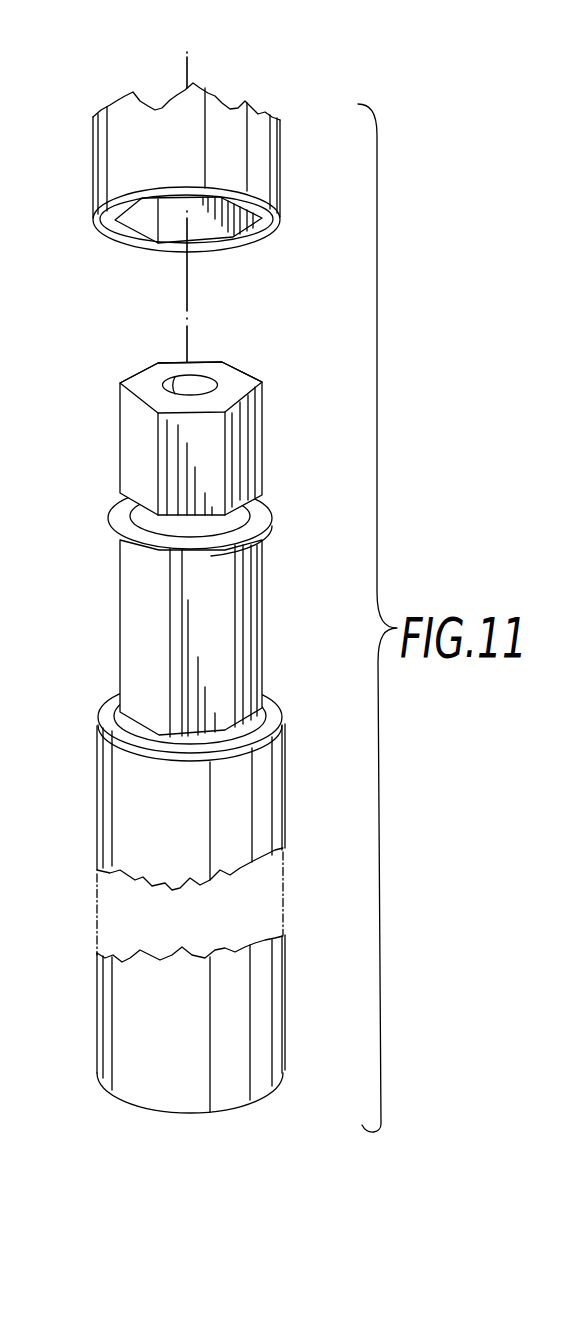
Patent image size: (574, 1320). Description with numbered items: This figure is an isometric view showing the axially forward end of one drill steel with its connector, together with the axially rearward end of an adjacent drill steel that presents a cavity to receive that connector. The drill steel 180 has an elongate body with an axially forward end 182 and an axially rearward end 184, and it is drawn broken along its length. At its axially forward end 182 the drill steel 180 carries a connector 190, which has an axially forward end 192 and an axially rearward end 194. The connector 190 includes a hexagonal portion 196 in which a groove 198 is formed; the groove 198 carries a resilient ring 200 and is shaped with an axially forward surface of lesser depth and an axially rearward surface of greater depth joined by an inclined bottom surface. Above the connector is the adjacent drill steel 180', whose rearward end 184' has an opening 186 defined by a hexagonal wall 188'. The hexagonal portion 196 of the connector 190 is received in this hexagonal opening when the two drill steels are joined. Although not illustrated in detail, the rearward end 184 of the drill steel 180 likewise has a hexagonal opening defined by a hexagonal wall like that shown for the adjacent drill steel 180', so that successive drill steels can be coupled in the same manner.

The adjacent drill steel 180' is at (235, 172).
The rearward end of adjacent drill steel 184' is at (220, 219).
The hexagonal wall 188' is at (216, 242).
The longitudinal axis 186 is at (178, 232).
The axially forward end of connector 192 is at (235, 376).
The connector 190 is at (188, 430).
The groove 198 is at (224, 512).
The resilient ring 200 is at (208, 548).
The hexagonal portion 196 is at (137, 617).
The axially rearward end of connector 194 is at (190, 715).
The axially forward end of drill steel 182 is at (105, 724).
The drill steel 180 is at (233, 934).
The axially rearward end of drill steel 184 is at (211, 1108).